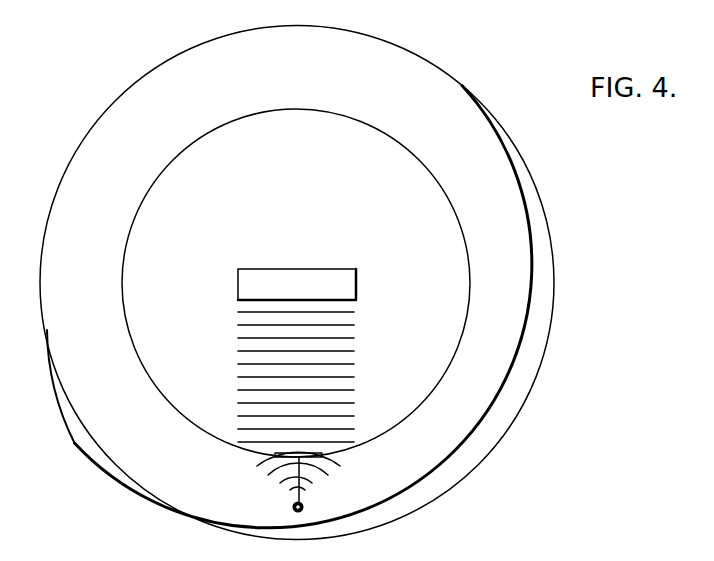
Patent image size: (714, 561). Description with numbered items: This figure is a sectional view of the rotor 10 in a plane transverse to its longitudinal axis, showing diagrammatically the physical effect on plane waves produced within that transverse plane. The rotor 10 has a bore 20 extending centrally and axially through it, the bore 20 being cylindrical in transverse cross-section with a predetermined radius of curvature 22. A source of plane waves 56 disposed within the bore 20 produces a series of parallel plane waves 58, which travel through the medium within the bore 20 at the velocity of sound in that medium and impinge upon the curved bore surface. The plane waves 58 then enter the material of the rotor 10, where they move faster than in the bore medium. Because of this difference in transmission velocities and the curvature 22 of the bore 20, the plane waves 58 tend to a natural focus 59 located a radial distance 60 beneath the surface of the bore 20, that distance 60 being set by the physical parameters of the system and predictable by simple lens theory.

The rotor 10 is at (513, 143).
The bore 20 is at (299, 283).
The radius of curvature 22 is at (436, 384).
The source of plane waves 56 is at (332, 275).
The plane waves 58 is at (238, 378).
The natural focus 59 is at (304, 512).
The radial distance 60 is at (291, 487).